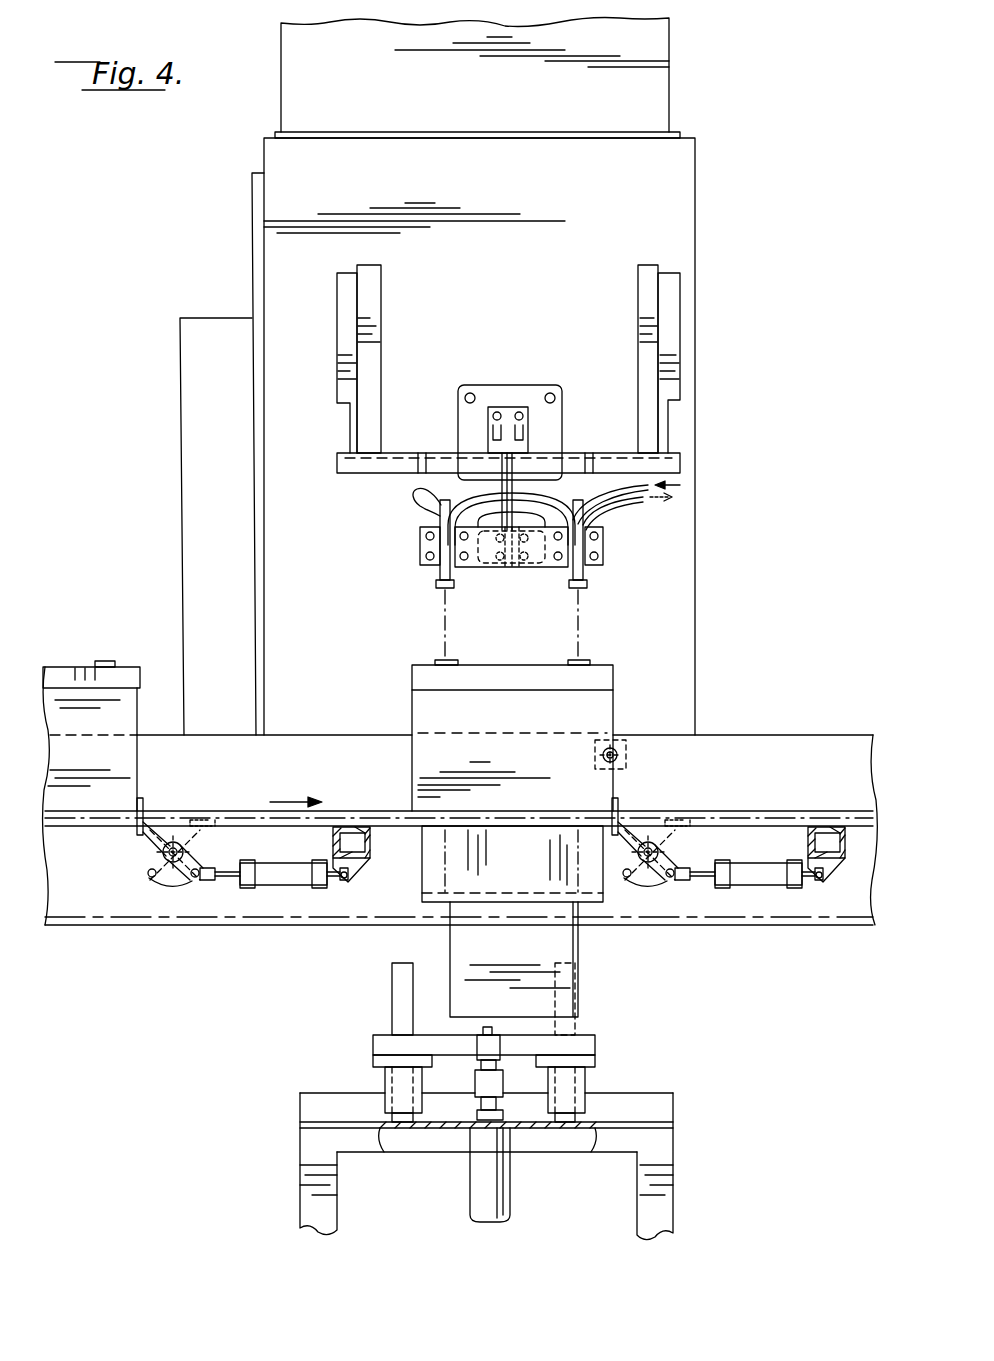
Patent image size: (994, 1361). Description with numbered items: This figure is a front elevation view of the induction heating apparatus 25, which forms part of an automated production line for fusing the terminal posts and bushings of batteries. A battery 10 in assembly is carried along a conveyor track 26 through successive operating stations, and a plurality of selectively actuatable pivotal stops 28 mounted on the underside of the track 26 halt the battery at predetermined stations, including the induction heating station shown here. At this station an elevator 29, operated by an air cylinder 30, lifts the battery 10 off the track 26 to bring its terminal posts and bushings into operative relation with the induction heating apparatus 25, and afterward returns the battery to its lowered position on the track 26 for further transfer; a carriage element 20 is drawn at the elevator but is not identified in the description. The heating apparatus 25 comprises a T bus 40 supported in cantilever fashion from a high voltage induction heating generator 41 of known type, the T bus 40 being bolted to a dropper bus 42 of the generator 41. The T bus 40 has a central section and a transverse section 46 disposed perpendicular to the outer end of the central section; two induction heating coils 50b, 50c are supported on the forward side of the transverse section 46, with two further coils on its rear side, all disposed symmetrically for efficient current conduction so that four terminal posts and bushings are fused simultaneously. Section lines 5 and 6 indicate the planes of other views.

The section line 5- 5 is at (613, 425).
The section line 6- 6 is at (353, 552).
The battery 10 is at (150, 700).
The carriage block 20 is at (410, 668).
The induction heating apparatus 25 is at (300, 476).
The conveyor track 26 is at (381, 811).
The pivotal stop 28 is at (143, 810).
The elevator 29 is at (572, 878).
The air cylinder 30 is at (480, 1188).
The T bus 40 is at (488, 479).
The induction heating generator 41 is at (683, 220).
The dropper bus 42 is at (516, 400).
The transverse section 46 is at (493, 578).
The induction heating coil 50b is at (440, 590).
The induction heating coil 50c is at (580, 590).